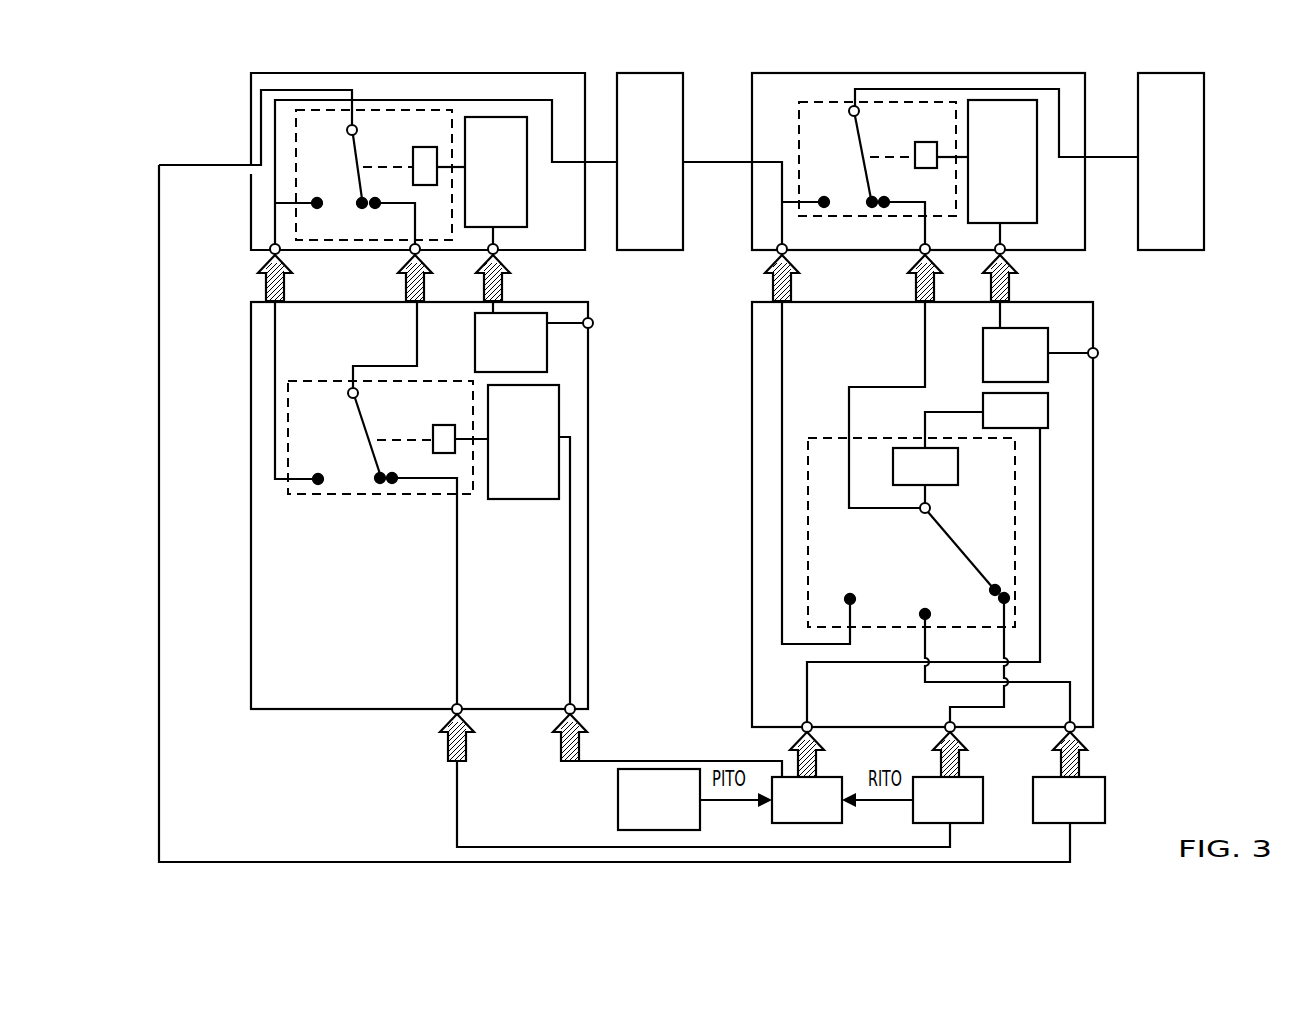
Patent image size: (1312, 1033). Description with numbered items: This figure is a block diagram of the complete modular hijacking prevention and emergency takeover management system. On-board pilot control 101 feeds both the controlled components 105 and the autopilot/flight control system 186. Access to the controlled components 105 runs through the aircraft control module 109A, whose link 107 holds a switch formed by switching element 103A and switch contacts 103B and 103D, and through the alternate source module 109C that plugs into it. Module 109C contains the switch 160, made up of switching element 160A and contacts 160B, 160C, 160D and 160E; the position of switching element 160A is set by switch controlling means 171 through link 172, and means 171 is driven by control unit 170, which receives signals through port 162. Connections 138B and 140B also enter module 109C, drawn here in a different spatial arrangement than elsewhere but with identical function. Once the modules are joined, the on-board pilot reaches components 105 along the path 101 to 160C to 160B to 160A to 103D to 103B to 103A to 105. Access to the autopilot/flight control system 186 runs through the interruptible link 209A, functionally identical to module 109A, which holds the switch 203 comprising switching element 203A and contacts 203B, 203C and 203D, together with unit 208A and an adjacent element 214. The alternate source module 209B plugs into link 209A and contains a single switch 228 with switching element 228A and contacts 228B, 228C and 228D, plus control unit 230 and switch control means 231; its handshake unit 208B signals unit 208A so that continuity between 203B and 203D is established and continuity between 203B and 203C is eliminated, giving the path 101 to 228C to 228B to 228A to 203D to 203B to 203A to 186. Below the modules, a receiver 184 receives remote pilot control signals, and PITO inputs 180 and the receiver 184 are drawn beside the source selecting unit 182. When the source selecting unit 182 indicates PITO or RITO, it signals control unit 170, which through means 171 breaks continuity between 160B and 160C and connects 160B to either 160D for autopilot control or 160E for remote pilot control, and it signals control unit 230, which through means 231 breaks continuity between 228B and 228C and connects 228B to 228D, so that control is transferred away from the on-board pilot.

The on-board pilot control 101 is at (666, 170).
The controlled component 105 is at (1187, 170).
The link 107 is at (835, 102).
The switching element 103A is at (862, 142).
The switch contact 103B is at (872, 210).
The switch contact 103D is at (880, 198).
The aircraft control module 109A is at (940, 73).
The alternate source module 109C is at (1093, 430).
The connection 138B is at (1068, 722).
The connection 140B is at (948, 722).
The switch 160 is at (911, 532).
The switching element 160A is at (940, 538).
The switch contact 160B is at (994, 585).
The switch contact 160C is at (851, 594).
The switch contact 160D is at (921, 613).
The switch contact 160E is at (1000, 603).
The port 162 is at (810, 722).
The control unit 170 is at (1032, 422).
The switch controlling means 171 is at (942, 478).
The link 172 is at (931, 504).
The PITO inputs 180 is at (618, 800).
The source selecting unit 182 is at (832, 823).
The receiver 184 is at (966, 823).
The autopilot/flight control system 186 is at (1085, 823).
The switch 203 is at (374, 175).
The switching element 203A is at (355, 160).
The switch contact 203B is at (363, 209).
The switch contact 203C is at (318, 198).
The switch contact 203D is at (377, 209).
The handshake unit 208A is at (519, 185).
The handshake unit 208B is at (534, 352).
The interruptible link 209A is at (395, 73).
The alternate source module 209B is at (588, 385).
The relay coil 214 is at (364, 165).
The switch 228 is at (380, 437).
The switching element 228A is at (366, 425).
The switch contact 228B is at (377, 483).
The switch contact 228C is at (332, 461).
The switch contact 228D is at (393, 484).
The control unit 230 is at (540, 448).
The switch control means 231 is at (437, 424).